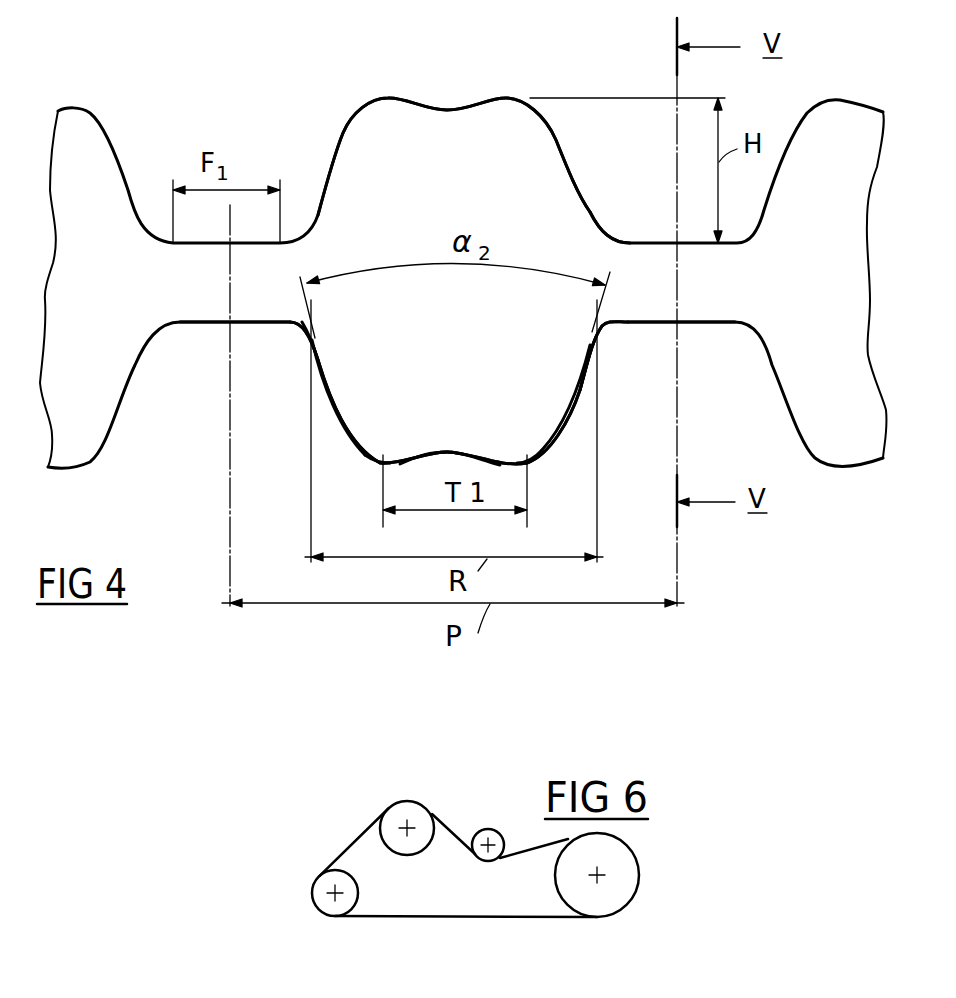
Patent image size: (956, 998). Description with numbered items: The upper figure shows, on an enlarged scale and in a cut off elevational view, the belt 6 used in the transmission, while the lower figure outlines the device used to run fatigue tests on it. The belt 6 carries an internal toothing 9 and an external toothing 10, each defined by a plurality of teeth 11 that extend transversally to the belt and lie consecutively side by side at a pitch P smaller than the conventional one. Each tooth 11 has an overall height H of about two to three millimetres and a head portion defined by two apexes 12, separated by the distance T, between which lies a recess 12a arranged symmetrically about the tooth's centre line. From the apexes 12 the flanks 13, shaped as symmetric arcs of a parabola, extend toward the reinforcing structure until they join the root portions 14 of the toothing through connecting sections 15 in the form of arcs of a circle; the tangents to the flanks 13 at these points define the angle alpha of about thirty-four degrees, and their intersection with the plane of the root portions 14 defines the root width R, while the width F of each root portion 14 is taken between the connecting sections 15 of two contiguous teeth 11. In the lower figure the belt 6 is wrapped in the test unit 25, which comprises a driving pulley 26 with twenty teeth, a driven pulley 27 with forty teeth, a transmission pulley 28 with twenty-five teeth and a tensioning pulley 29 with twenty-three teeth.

In FIG. 4, the internal toothing 9 is at (337, 417).
In FIG. 4, the external toothing 10 is at (345, 140).
In FIG. 4, the tooth 11 is at (458, 199).
In FIG. 4, the apex 12 is at (380, 467).
In FIG. 4, the recess 12a is at (458, 455).
In FIG. 4, the flank 13 is at (330, 381).
In FIG. 4, the root portion 14 is at (207, 324).
In FIG. 4, the connecting section 15 is at (606, 233).
In FIG. 6, the test unit 25 is at (508, 849).
In FIG. 6, the driving pulley 26 is at (357, 893).
In FIG. 6, the driven pulley 27 is at (634, 880).
In FIG. 6, the transmission pulley 28 is at (422, 842).
In FIG. 6, the tensioning pulley 29 is at (490, 828).
In FIG. 6, the belt 6 is at (449, 929).